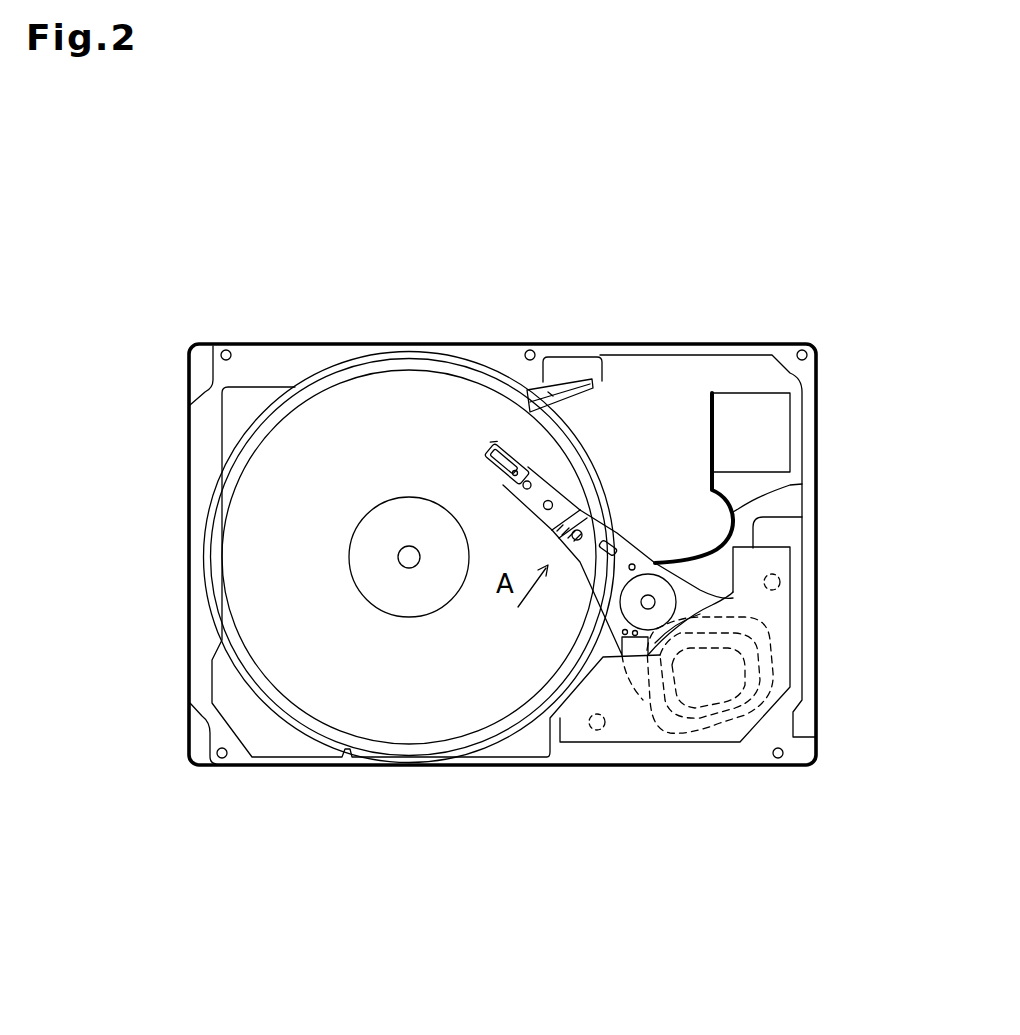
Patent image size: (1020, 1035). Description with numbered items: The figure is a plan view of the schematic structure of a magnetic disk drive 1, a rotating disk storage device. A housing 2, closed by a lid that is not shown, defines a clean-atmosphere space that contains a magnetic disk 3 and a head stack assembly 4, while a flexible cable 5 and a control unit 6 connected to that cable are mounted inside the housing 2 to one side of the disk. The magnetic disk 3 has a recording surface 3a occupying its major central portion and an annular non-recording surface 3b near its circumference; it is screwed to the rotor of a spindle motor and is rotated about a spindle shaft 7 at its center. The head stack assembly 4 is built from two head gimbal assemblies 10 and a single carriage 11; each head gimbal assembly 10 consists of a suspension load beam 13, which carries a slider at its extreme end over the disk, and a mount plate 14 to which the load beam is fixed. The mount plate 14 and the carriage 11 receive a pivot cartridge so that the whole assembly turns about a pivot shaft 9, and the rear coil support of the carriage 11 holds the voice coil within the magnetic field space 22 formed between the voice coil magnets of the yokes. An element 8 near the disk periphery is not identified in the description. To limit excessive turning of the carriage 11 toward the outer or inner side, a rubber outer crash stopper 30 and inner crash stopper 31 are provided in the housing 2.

The hard disk drive 1 is at (455, 343).
The housing 2 is at (683, 397).
The magnetic disk 3 is at (343, 614).
The recording surface 3a is at (277, 575).
The annular non-recording surface 3b is at (222, 602).
The head stack assembly 4 is at (647, 584).
The flexible cable 5 is at (733, 512).
The control unit 6 is at (770, 433).
The spindle shaft 7 is at (400, 553).
The ramp 8 is at (565, 403).
The pivot shaft 9 is at (650, 594).
The head gimbal assembly 10 is at (617, 540).
The carriage 11 is at (742, 621).
The suspension load beam 13 is at (517, 471).
The mount plate 14 is at (598, 573).
The magnetic field space 22 is at (796, 660).
The outer crash stopper 30 is at (597, 732).
The inner crash stopper 31 is at (785, 580).